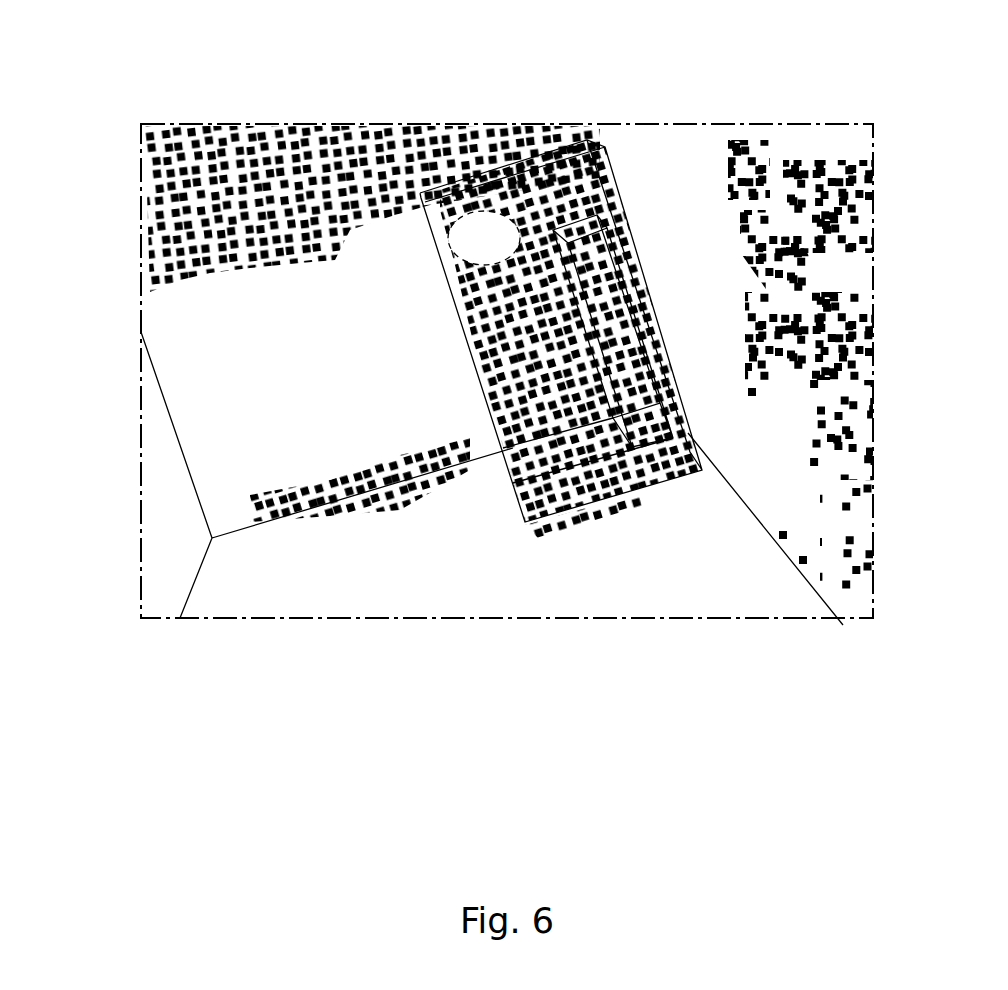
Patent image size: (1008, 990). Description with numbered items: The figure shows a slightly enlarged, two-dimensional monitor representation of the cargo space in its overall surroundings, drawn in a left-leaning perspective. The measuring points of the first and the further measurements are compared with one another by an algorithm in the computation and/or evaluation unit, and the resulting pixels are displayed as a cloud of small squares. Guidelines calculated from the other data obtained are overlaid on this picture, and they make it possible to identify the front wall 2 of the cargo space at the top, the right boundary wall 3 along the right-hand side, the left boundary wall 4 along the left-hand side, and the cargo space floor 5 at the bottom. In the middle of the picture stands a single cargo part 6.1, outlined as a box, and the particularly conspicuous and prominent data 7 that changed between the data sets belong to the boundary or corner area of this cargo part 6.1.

The front wall of the cargo space 2 is at (378, 107).
The right boundary wall of the cargo space 3 is at (713, 112).
The left boundary wall of the cargo space 4 is at (130, 535).
The cargo space floor 5 is at (557, 640).
The single cargo part 6.1 is at (508, 256).
The change of individual conspicuous 3D data 7 is at (523, 340).